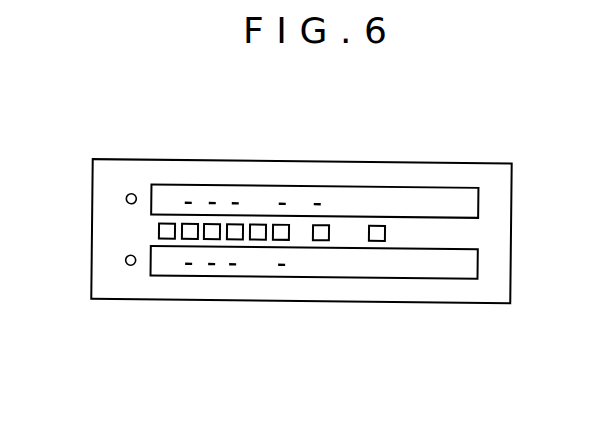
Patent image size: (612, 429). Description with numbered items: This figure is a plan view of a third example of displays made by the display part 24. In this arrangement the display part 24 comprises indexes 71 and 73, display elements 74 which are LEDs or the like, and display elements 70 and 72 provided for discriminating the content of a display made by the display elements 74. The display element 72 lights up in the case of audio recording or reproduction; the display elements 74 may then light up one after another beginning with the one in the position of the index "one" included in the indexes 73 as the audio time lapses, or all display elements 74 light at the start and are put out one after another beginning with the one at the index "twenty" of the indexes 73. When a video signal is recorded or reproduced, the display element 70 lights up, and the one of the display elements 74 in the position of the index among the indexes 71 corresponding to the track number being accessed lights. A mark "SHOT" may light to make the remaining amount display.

The display part 24 is at (484, 172).
The display element 70 is at (131, 194).
The indexes 71 is at (208, 184).
The display element 72 is at (131, 266).
The indexes 73 is at (199, 277).
The display elements 74 is at (158, 231).